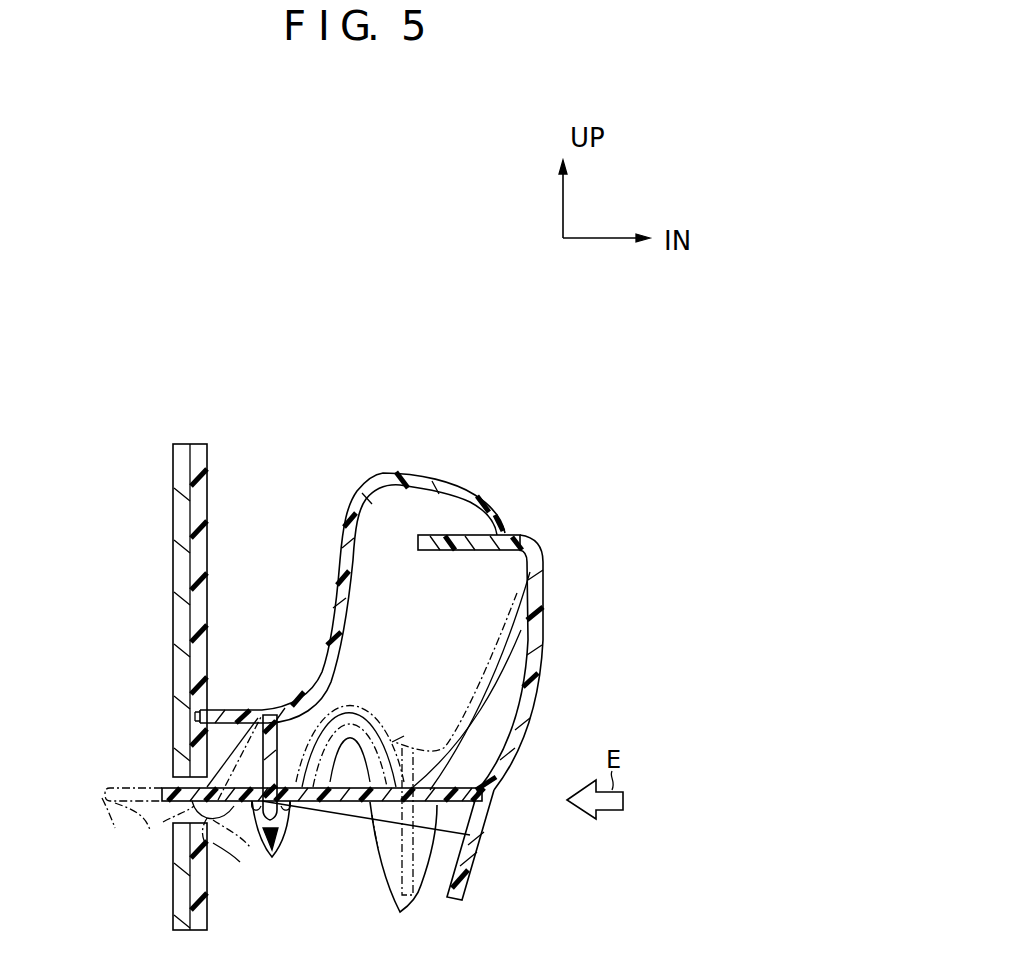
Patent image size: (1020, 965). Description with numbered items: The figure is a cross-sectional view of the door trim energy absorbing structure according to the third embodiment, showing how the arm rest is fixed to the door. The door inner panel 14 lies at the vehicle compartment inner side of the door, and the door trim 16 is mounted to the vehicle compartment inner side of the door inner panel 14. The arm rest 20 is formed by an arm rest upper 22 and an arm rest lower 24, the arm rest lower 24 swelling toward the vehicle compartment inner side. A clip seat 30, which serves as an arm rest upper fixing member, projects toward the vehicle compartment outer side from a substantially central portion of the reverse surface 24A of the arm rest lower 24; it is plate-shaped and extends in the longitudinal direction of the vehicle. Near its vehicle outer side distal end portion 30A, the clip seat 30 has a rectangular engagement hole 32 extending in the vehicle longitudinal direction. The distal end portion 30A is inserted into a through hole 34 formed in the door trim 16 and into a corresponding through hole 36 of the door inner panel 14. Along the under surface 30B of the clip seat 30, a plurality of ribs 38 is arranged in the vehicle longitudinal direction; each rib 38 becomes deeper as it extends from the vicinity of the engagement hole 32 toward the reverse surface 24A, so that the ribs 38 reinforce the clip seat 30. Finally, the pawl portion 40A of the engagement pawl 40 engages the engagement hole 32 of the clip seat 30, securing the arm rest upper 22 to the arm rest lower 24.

The door inner panel 14 is at (172, 662).
The door trim 16 is at (312, 372).
The arm rest 20 is at (543, 395).
The arm rest upper 22 is at (437, 477).
The arm rest lower 24 is at (536, 535).
The reverse surface 24A is at (449, 854).
The clip seat 30 is at (452, 790).
The distal end portion 30A is at (160, 801).
The under surface 30B is at (352, 806).
The engagement hole 32 is at (256, 770).
The through hole 34 is at (228, 822).
The through hole 36 is at (178, 817).
The ribs 38 is at (403, 847).
The engagement pawl 40 is at (298, 722).
The pawl portion 40A is at (276, 857).